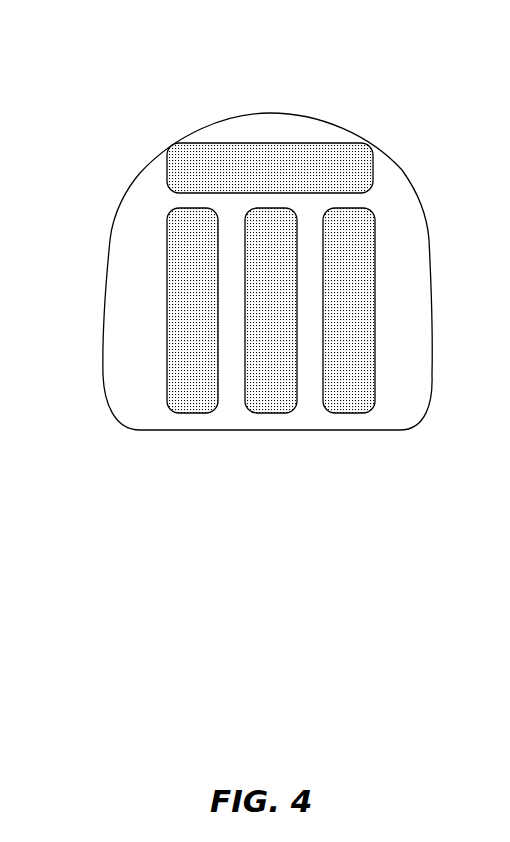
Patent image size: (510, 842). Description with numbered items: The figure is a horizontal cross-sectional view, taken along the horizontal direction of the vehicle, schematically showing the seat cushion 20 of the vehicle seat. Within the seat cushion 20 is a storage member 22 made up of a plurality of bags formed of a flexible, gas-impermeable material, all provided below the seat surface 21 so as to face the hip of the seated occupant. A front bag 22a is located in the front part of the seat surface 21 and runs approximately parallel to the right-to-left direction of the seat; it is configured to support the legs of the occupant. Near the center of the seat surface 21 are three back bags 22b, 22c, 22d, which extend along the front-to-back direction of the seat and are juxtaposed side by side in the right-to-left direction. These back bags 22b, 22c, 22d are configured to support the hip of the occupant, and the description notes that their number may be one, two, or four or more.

The seat cushion 20 is at (111, 229).
The seat surface 21 is at (387, 140).
The storage member 22 is at (325, 63).
The front bag 22a is at (178, 147).
The back bag 22b is at (192, 227).
The back bag 22c is at (280, 227).
The back bag 22d is at (347, 227).